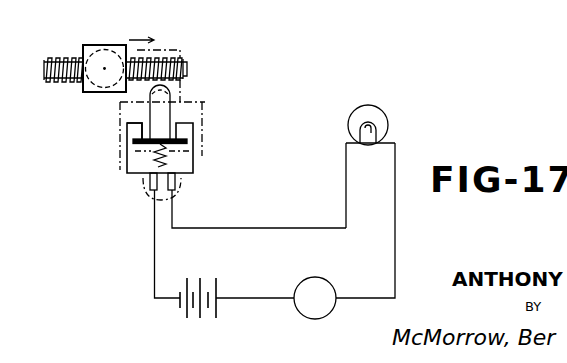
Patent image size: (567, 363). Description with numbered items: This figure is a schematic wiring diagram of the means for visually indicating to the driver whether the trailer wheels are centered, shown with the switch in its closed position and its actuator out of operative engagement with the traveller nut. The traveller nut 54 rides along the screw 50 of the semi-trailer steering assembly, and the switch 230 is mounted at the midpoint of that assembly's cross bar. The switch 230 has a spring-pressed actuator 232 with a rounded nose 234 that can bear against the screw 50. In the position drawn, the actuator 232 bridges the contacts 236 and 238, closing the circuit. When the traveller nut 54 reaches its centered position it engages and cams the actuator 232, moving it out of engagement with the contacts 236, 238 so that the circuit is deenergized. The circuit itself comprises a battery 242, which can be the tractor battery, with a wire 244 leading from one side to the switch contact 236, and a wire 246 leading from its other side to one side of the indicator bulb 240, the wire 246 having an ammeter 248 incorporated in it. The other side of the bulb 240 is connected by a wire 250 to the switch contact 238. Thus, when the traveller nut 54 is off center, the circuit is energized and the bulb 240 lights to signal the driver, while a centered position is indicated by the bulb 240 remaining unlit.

The screw 50 is at (66, 58).
The traveller nut 54 is at (107, 52).
The switch 230 is at (212, 149).
The spring-pressed actuator 232 is at (166, 112).
The rounded nose 234 is at (165, 89).
The switch contact 236 is at (133, 143).
The switch contact 238 is at (180, 141).
The indicator bulb 240 is at (386, 119).
The battery 242 is at (213, 311).
The wire 244 is at (155, 262).
The wire 246 is at (396, 262).
The ammeter 248 is at (321, 316).
The wire 250 is at (298, 227).